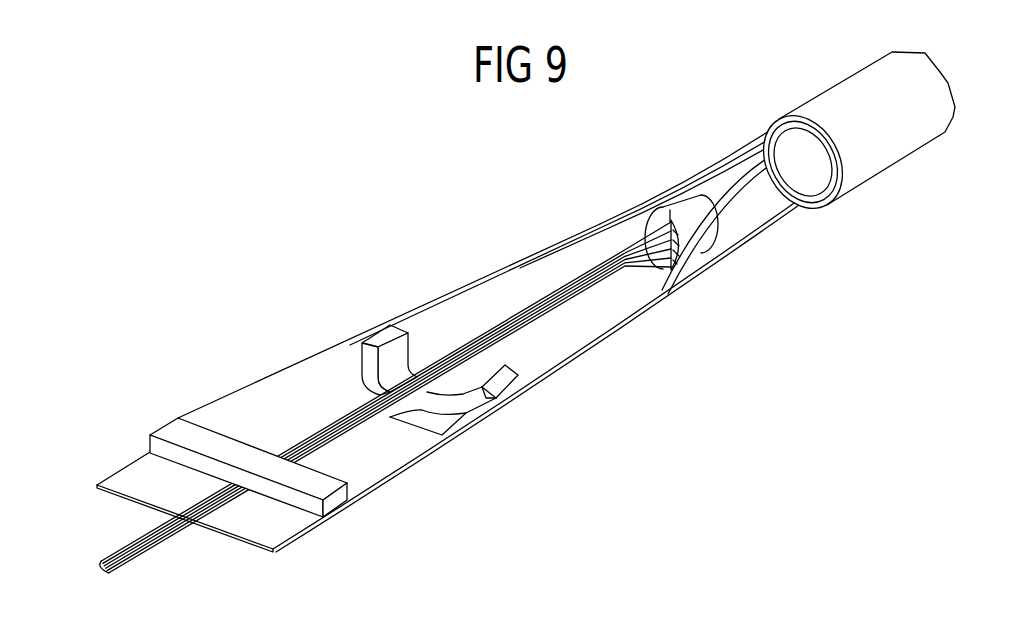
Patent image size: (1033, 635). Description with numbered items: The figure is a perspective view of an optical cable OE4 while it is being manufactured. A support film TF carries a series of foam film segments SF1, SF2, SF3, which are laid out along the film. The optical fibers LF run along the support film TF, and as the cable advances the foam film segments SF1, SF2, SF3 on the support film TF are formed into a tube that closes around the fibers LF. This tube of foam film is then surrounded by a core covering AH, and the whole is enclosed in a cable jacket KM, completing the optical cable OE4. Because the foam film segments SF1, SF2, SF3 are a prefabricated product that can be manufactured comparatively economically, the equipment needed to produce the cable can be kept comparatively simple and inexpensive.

The support film TF is at (232, 425).
The fibers LF is at (337, 417).
The foam film segment SF1 is at (338, 502).
The foam film segment SF2 is at (505, 387).
The foam film segment SF3 is at (652, 225).
The optical cable OE4 is at (492, 241).
The cable jacket KM is at (882, 157).
The core covering AH is at (815, 197).